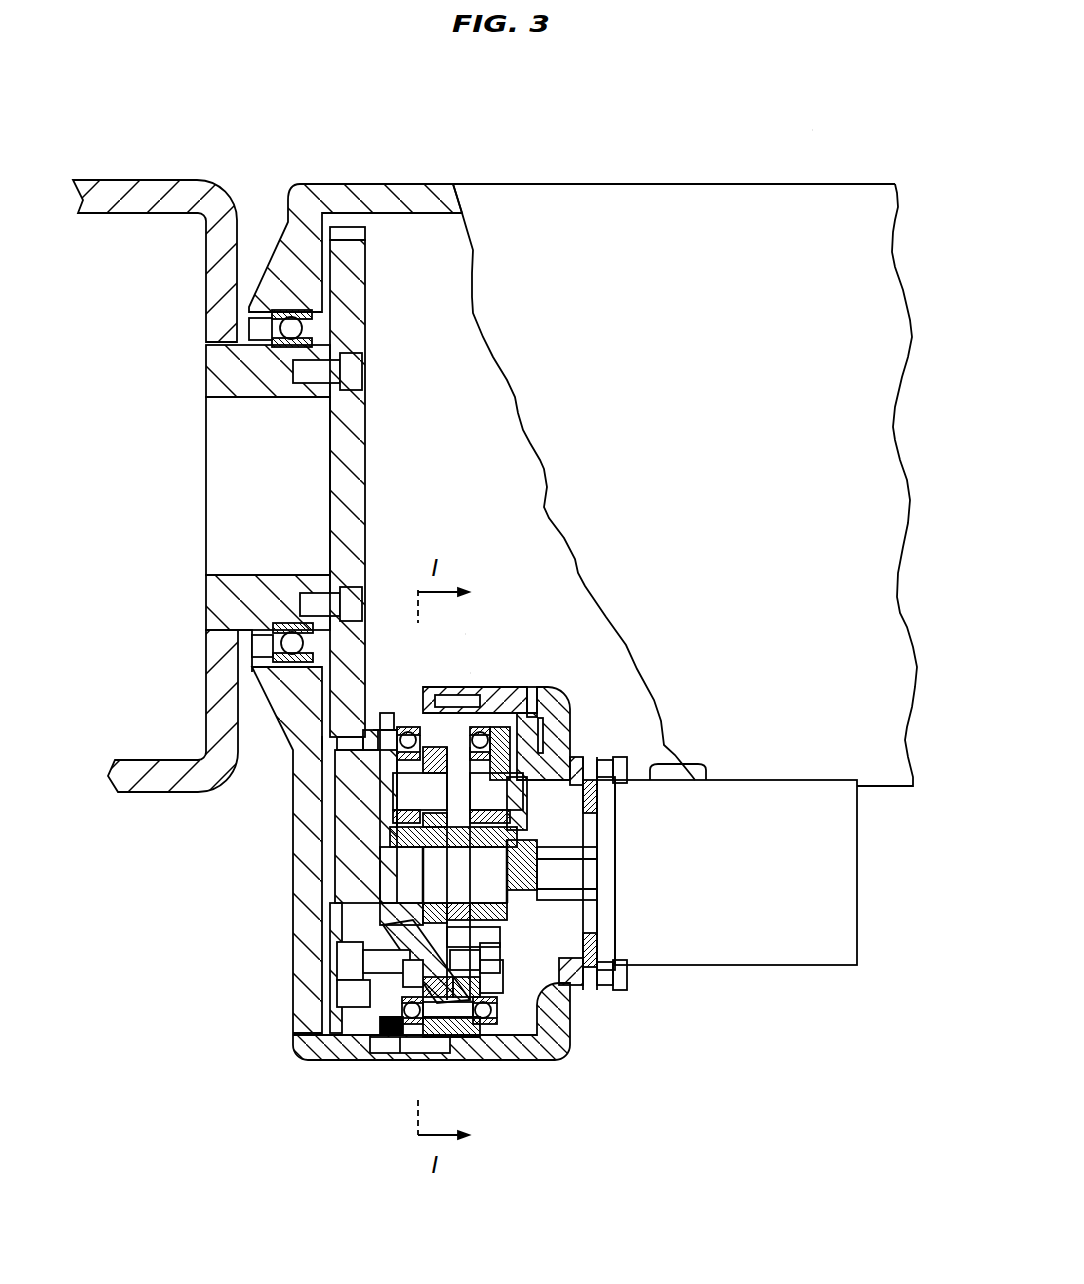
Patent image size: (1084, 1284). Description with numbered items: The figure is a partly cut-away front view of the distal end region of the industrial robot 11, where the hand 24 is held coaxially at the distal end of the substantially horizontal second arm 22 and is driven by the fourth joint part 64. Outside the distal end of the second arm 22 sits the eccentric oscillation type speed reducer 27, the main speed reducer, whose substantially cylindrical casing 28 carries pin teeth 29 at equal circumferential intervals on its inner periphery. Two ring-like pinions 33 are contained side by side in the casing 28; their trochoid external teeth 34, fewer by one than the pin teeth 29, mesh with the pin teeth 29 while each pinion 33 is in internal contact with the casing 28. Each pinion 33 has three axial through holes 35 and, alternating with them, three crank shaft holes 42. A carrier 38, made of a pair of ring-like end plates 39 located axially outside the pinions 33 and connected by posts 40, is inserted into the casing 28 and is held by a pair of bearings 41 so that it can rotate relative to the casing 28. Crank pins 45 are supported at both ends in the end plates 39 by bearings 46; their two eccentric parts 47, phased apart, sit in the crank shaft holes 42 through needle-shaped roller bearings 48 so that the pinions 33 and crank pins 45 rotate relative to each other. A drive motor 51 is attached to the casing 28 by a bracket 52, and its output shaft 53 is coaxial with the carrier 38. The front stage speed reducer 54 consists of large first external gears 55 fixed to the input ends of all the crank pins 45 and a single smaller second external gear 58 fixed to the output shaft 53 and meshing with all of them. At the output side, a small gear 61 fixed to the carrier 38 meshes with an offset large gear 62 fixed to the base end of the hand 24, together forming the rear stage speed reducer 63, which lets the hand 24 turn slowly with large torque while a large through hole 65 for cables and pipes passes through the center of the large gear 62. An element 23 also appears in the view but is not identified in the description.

The industrial robot 11 is at (822, 121).
The second arm 22 is at (684, 184).
The wheel bearing 23 is at (305, 329).
The hand 24 is at (143, 178).
The eccentric oscillation type speed reducer 27 is at (479, 665).
The casing 28 is at (440, 688).
The pin teeth 29 is at (453, 1015).
The pinions 33 is at (457, 910).
The external teeth 34 is at (445, 757).
The through holes 35 is at (373, 923).
The carrier 38 is at (352, 936).
The end plates 39 is at (507, 918).
The posts 40 is at (494, 1040).
The bearings 41 is at (492, 768).
The crank shaft holes 42 is at (425, 712).
The crank pins 45 is at (503, 795).
The bearings 46 is at (548, 712).
The eccentric parts 47 is at (430, 793).
The needle-shaped roller bearings 48 is at (400, 823).
The drive motor 51 is at (858, 876).
The bracket 52 is at (532, 1050).
The output shaft 53 is at (590, 874).
The front stage speed reducer 54 is at (555, 768).
The first external gears 55 is at (520, 828).
The second external gear 58 is at (592, 905).
The small gear 61 is at (343, 855).
The large gear 62 is at (357, 276).
The rear stage speed reducer 63 is at (310, 744).
The fourth joint part 64 is at (474, 626).
The through hole 65 is at (270, 398).